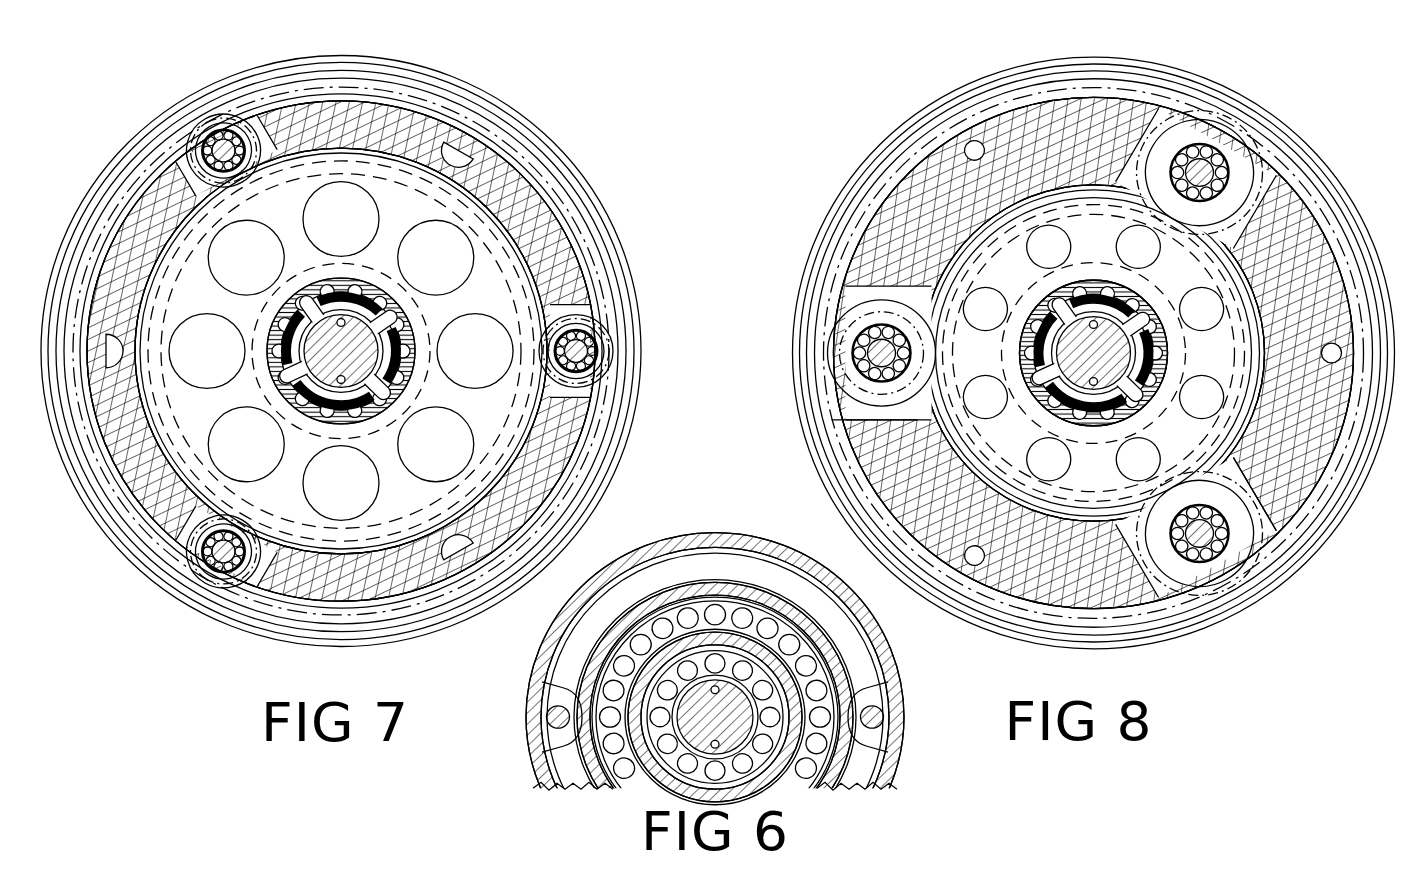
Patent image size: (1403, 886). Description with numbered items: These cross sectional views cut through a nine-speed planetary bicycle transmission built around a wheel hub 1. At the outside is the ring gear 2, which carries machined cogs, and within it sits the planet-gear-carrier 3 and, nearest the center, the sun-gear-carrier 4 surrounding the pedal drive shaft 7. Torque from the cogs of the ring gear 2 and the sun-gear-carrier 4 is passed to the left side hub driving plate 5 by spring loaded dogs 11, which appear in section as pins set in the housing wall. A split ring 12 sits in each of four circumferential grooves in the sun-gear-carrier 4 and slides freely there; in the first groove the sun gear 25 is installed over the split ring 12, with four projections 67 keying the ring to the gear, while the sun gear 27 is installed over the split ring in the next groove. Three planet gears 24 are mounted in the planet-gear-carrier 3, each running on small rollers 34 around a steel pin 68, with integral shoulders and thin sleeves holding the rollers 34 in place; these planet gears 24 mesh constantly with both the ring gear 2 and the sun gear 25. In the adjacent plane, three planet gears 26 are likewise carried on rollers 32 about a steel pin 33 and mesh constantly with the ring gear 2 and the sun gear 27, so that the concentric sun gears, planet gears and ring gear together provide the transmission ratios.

In FIG. 7, the wheel hub 1 is at (341, 336).
In FIG. 8, the wheel hub 1 is at (1094, 346).
In FIG. 7, the ring gear 2 is at (341, 347).
In FIG. 8, the ring gear 2 is at (1094, 353).
In FIG. 7, the planet-gear-carrier 3 is at (341, 350).
In FIG. 8, the planet-gear-carrier 3 is at (1094, 353).
In FIG. 7, the sun-gear-carrier 4 is at (324, 350).
In FIG. 8, the sun-gear-carrier 4 is at (1074, 353).
In FIG. 6, the sun-gear-carrier 4 is at (715, 688).
In FIG. 6, the left side hub driving plate 5 is at (715, 679).
In FIG. 8, the pedal drive shaft 7 is at (1104, 343).
In FIG. 6, the spring loaded dogs 11 is at (679, 693).
In FIG. 7, the split ring 12 is at (386, 361).
In FIG. 8, the split ring 12 is at (1142, 353).
In FIG. 7, the planet gears 24 is at (431, 336).
In FIG. 7, the sun gear 25 is at (384, 351).
In FIG. 8, the planet gear 26 is at (1044, 353).
In FIG. 8, the sun gear 27 is at (836, 430).
In FIG. 8, the rollers 32 is at (985, 408).
In FIG. 8, the steel pin 33 is at (1276, 539).
In FIG. 7, the small rollers 34 is at (444, 299).
In FIG. 7, the projections 67 is at (341, 351).
In FIG. 8, the projections 67 is at (1094, 352).
In FIG. 7, the steel pin 68 is at (400, 352).